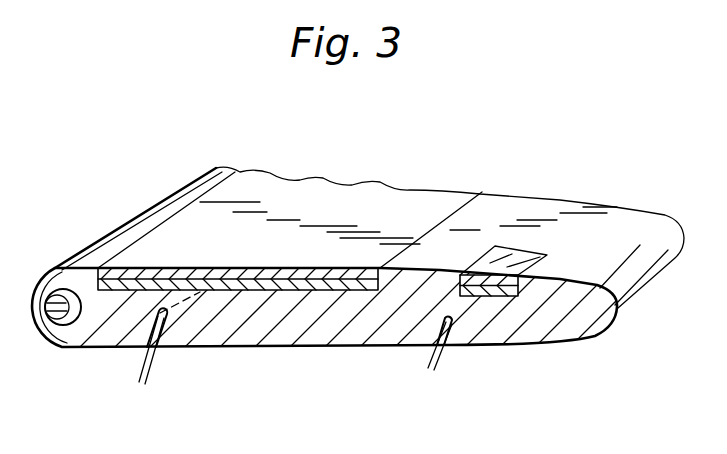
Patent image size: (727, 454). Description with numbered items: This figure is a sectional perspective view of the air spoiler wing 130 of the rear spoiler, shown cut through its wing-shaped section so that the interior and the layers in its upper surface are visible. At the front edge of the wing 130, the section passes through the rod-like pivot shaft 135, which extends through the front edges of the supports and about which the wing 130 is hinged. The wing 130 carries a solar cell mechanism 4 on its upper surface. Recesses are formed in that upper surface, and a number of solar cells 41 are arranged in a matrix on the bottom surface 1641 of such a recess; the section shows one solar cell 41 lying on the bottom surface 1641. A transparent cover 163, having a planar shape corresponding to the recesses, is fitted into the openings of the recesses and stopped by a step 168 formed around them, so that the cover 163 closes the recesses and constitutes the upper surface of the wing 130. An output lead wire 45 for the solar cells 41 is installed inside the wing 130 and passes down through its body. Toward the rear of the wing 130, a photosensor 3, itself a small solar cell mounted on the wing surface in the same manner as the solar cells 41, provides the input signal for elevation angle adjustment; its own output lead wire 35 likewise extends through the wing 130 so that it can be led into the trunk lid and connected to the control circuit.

The photosensor 3 is at (530, 334).
The solar cell mechanism 4 is at (163, 173).
The air spoiler wing 130 is at (54, 268).
The pivot shaft 135 is at (58, 318).
The transparent cover 163 is at (148, 243).
The step 168 is at (93, 269).
The solar cell 41 is at (253, 287).
The bottom surface of recess 1641 is at (310, 287).
The output lead wire 45 is at (140, 385).
The output lead wire 35 is at (428, 370).